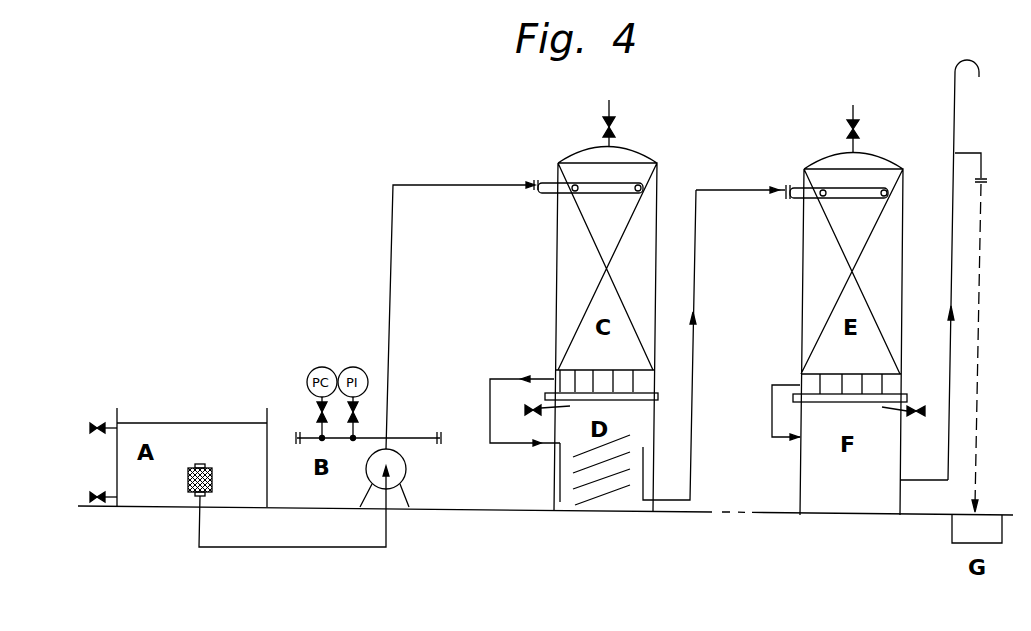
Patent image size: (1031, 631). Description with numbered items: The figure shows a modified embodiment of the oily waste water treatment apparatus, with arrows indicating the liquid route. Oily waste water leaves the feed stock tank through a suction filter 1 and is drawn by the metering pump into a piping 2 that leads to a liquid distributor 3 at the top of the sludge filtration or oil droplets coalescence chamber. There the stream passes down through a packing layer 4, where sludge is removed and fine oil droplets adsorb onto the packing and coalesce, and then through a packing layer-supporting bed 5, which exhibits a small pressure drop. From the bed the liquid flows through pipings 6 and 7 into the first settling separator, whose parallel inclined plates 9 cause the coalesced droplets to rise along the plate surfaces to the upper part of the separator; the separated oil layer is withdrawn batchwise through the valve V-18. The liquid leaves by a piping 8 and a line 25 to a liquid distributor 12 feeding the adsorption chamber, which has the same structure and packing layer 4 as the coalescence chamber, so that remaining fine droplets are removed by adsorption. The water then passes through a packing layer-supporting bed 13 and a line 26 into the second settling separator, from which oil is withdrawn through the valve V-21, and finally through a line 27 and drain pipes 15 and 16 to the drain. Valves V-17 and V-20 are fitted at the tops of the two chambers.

The suction filter 1 is at (213, 478).
The piping 2 is at (392, 298).
The liquid distributor 3 is at (643, 187).
The packing layer 4 is at (645, 247).
The packing layer-supporting bed 5 is at (630, 370).
The piping 6 is at (500, 443).
The piping 7 is at (558, 488).
The piping 8 is at (644, 475).
The plates 9 is at (616, 440).
The liquid distributor 12 is at (886, 191).
The packing layer-supporting bed 13 is at (876, 373).
The drain pipe 15 is at (954, 268).
The drain pipe 16 is at (980, 258).
The piping 25 is at (749, 189).
The piping 26 is at (768, 412).
The piping 27 is at (912, 482).
The valve V-17 is at (632, 123).
The valve V-18 is at (531, 400).
The valve V-20 is at (876, 129).
The valve V-21 is at (915, 401).